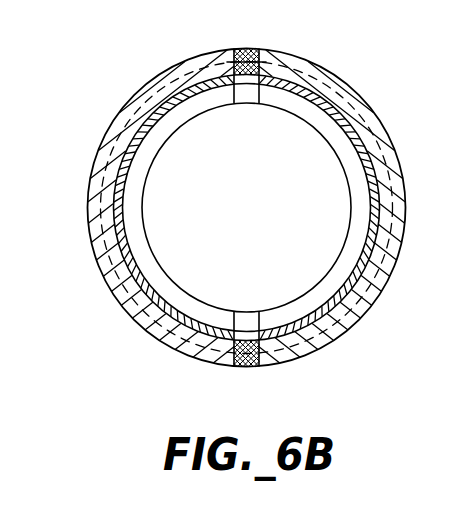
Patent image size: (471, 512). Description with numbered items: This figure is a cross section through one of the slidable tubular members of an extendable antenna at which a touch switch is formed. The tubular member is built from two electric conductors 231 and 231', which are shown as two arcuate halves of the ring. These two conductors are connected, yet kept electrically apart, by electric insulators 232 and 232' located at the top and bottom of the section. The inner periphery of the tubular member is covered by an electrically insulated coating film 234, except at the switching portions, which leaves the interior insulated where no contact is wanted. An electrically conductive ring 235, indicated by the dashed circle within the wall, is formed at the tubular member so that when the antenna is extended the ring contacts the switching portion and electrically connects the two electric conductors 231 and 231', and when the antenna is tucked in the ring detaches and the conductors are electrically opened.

The electric conductor 231 is at (135, 206).
The electric conductor 231' is at (354, 206).
The electric insulator 232 is at (271, 61).
The electric insulator 232' is at (270, 357).
The electrically insulated coating film 234 is at (344, 289).
The electrically conductive ring 235 is at (144, 86).